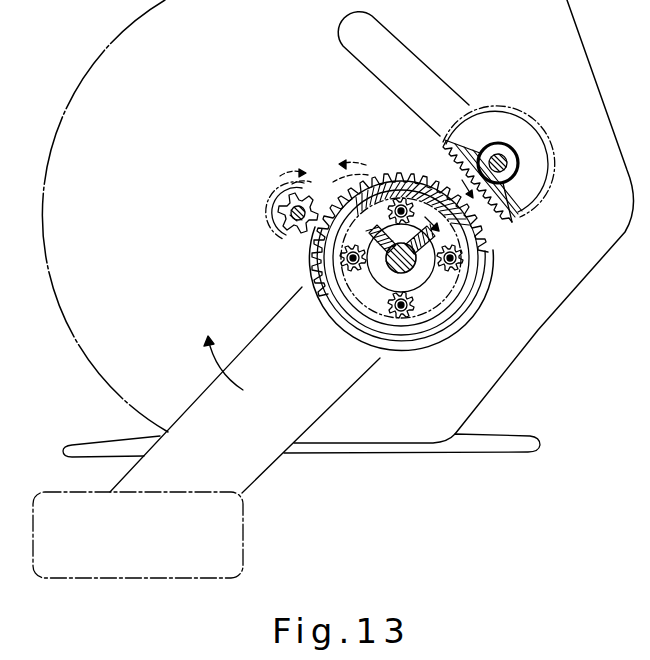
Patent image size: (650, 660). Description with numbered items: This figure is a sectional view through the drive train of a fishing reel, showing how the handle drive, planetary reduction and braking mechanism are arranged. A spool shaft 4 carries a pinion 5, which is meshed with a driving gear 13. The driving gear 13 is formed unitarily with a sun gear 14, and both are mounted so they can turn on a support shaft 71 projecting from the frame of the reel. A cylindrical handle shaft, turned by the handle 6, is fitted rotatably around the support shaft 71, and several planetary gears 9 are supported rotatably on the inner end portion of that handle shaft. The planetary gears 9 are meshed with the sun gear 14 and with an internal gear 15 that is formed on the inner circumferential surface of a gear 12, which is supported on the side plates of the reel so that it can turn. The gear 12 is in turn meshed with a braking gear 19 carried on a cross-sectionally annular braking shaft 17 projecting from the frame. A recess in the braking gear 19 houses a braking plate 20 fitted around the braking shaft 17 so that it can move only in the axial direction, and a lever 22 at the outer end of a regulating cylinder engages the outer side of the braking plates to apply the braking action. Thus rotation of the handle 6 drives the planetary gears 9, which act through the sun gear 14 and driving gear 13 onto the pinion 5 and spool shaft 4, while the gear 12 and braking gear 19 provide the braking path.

The spool shaft 4 is at (291, 215).
The pinion 5 is at (302, 244).
The handle 6 is at (258, 478).
The planetary gears 9 is at (401, 198).
The gear 12 is at (389, 178).
The driving gear 13 is at (338, 190).
The sun gear 14 is at (413, 275).
The internal gear 15 is at (418, 193).
The braking shaft 17 is at (512, 163).
The braking gear 19 is at (544, 217).
The braking plate 20 is at (513, 177).
The lever 22 is at (421, 62).
The support shaft 71 is at (408, 268).